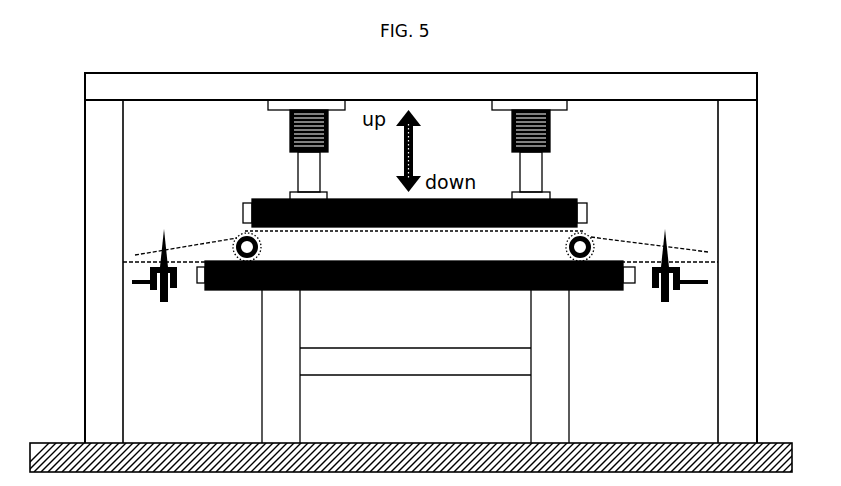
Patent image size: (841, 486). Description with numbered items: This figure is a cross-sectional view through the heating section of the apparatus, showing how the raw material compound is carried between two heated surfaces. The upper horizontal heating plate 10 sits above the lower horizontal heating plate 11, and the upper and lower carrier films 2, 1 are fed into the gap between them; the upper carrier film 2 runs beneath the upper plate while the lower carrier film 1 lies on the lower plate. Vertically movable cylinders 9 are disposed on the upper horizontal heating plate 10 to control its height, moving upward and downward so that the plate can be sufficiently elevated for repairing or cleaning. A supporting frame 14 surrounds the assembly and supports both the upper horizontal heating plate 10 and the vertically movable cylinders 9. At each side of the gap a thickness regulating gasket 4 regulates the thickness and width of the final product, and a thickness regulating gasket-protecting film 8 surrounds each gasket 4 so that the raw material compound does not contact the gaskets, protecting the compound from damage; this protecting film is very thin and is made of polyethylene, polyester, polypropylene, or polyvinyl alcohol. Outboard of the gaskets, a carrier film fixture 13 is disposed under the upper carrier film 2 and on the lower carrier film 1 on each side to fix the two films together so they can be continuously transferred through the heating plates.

The lower carrier film 1 is at (123, 262).
The upper carrier film 2 is at (135, 255).
The thickness regulating gasket 4 is at (258, 248).
The thickness regulating gasket-protecting film 8 is at (230, 237).
The vertically movable cylinder 9 is at (290, 128).
The upper horizontal heating plate 10 is at (572, 200).
The lower horizontal heating plate 11 is at (407, 290).
The carrier film fixture 13 is at (161, 302).
The supporting frame 14 is at (85, 254).